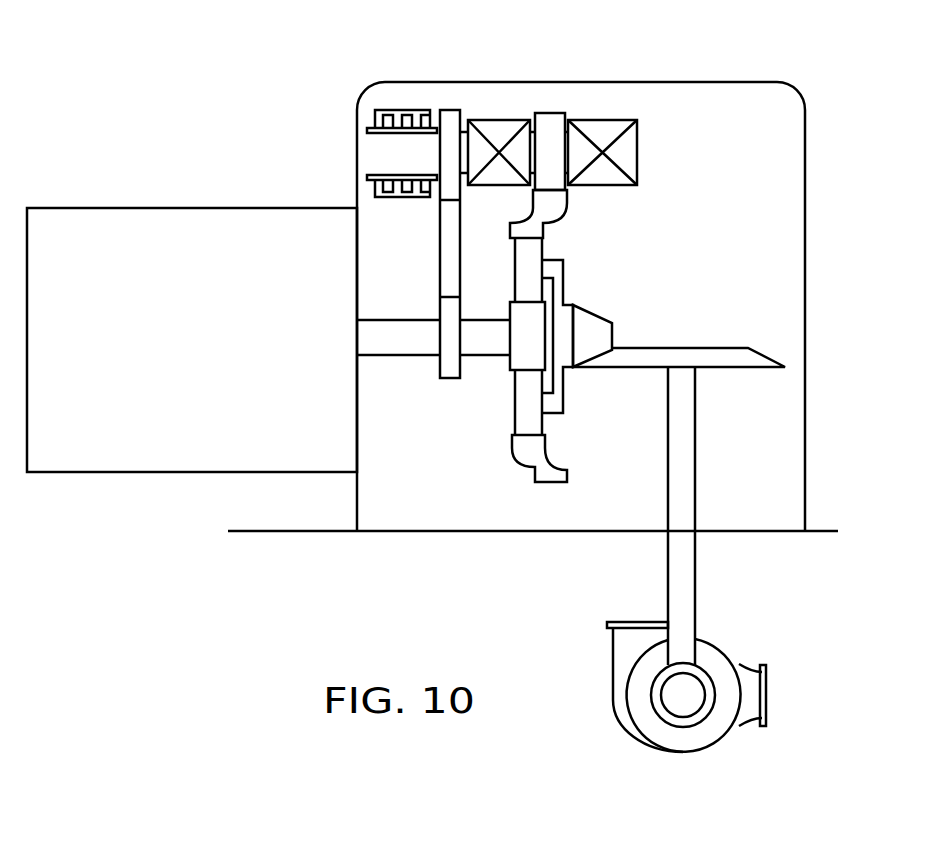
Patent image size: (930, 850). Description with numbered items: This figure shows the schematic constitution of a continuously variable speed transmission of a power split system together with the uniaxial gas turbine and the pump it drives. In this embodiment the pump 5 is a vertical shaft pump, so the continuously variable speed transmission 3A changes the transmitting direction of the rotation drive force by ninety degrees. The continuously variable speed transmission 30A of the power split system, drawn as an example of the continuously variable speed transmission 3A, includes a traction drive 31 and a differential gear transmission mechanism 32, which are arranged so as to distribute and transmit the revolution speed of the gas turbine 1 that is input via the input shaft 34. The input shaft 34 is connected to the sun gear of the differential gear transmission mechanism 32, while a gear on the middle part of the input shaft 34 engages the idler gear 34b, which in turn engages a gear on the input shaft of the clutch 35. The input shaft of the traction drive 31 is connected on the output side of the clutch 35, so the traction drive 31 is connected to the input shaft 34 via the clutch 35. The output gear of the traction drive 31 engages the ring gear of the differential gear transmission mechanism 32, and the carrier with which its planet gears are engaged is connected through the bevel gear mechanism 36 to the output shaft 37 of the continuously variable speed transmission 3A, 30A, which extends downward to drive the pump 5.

The gas turbine 1 is at (143, 207).
The continuously variable speed transmission of a power split system 30A is at (600, 279).
The continuously variable speed transmission 3A is at (715, 82).
The traction drive 31 is at (620, 95).
The differential gear transmission mechanism 32 is at (515, 465).
The input shaft 34 is at (400, 357).
The idler gear 34b is at (440, 262).
The clutch 35 is at (406, 95).
The bevel gear mechanism 36 is at (637, 300).
The output shaft 37 is at (695, 457).
The pump 5 is at (787, 673).